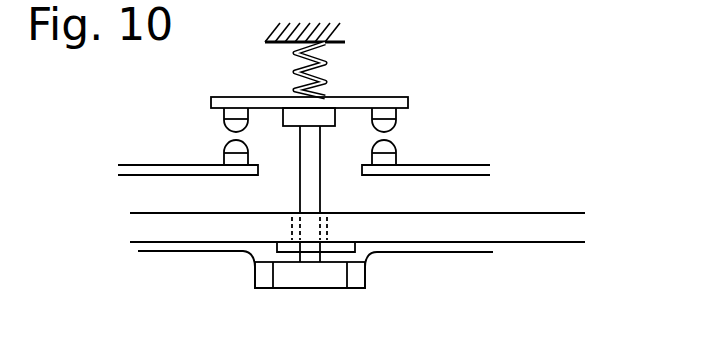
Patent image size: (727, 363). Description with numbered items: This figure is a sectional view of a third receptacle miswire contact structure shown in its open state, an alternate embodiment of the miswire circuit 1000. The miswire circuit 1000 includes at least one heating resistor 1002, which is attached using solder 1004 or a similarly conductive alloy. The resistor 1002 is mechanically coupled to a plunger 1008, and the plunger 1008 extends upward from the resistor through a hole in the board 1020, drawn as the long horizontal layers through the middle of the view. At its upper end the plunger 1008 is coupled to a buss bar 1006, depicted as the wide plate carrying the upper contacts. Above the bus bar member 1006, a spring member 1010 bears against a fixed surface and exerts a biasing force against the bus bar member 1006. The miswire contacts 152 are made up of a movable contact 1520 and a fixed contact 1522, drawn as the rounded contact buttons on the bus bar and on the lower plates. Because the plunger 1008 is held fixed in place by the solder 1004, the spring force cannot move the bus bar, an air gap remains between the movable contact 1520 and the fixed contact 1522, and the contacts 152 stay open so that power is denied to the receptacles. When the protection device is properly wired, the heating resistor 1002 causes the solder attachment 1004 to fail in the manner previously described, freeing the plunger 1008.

The miswire circuit 1000 is at (373, 179).
The heating resistor 1002 is at (310, 290).
The solder 1004 is at (377, 257).
The buss bar 1006 is at (365, 97).
The plunger 1008 is at (321, 180).
The spring member 1010 is at (293, 72).
The board 1020 is at (546, 213).
The miswire contacts 152 is at (306, 156).
The movable contact 1520 is at (250, 141).
The fixed contact 1522 is at (225, 132).